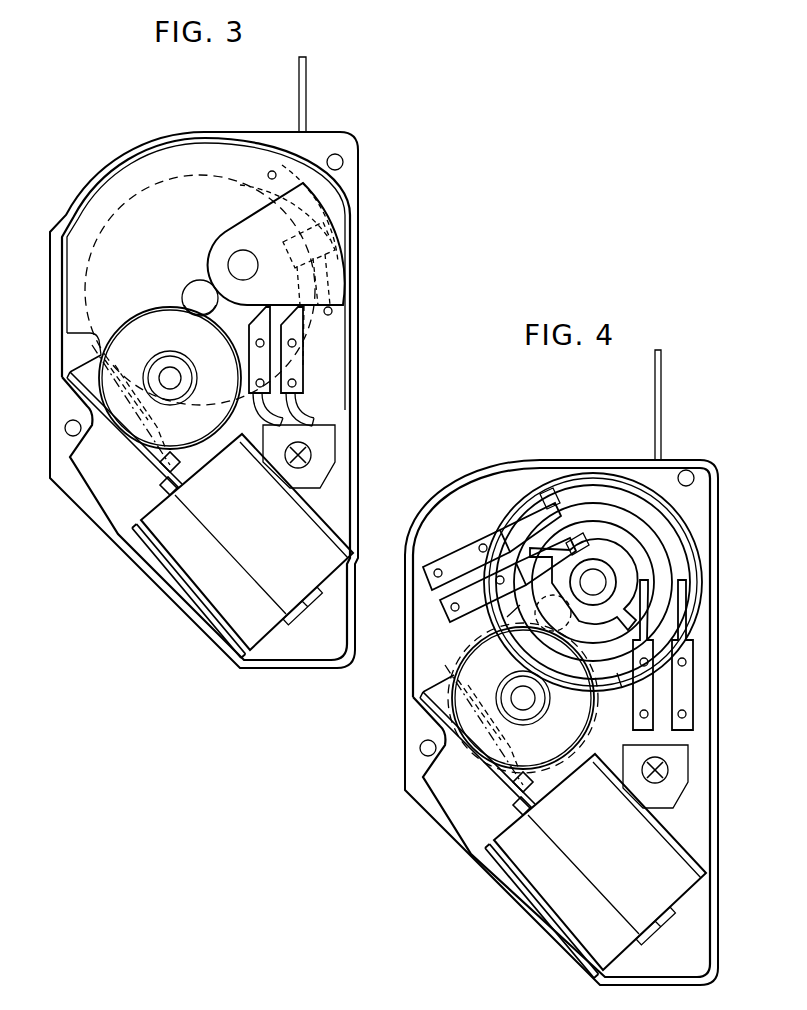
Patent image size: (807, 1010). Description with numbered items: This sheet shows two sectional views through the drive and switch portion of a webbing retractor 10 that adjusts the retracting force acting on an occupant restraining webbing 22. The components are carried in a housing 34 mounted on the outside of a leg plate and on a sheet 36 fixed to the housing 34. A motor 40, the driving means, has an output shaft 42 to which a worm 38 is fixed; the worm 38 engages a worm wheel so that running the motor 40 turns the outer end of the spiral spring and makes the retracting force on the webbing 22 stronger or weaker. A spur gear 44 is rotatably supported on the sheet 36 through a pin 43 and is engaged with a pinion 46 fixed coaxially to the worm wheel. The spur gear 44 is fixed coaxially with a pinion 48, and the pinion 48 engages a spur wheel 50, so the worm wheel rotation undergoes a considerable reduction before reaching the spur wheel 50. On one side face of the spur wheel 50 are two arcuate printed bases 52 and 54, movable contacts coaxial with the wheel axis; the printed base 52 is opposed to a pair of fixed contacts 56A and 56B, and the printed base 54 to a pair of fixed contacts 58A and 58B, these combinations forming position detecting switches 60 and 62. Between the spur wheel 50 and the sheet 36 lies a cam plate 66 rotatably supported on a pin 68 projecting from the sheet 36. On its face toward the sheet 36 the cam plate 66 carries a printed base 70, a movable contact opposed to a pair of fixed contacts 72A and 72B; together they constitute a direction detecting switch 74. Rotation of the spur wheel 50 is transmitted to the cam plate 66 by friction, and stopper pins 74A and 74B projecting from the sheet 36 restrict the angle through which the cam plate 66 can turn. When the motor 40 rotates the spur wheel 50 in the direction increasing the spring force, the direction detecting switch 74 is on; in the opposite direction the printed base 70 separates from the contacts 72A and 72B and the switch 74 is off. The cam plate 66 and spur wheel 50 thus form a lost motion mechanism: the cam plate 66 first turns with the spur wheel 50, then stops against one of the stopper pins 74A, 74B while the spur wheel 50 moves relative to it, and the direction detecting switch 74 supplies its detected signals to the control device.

In FIG. 3, the webbing retractor 10 is at (127, 207).
In FIG. 3, the occupant restraining webbing 22 is at (307, 100).
In FIG. 4, the occupant restraining webbing 22 is at (662, 409).
In FIG. 3, the housing 34 is at (357, 161).
In FIG. 4, the housing 34 is at (412, 736).
In FIG. 3, the sheet 36 is at (340, 366).
In FIG. 3, the worm 38 is at (98, 365).
In FIG. 4, the worm 38 is at (447, 742).
In FIG. 3, the motor 40 is at (195, 588).
In FIG. 4, the motor 40 is at (594, 866).
In FIG. 3, the output shaft 42 is at (165, 480).
In FIG. 3, the pin 43 is at (168, 367).
In FIG. 3, the spur gear 44 is at (155, 313).
In FIG. 4, the spur gear 44 is at (510, 704).
In FIG. 3, the pinion 46 is at (194, 287).
In FIG. 3, the pinion 48 is at (192, 367).
In FIG. 4, the pinion 48 is at (509, 691).
In FIG. 4, the spur wheel 50 is at (500, 522).
In FIG. 4, the printed base 52 is at (645, 558).
In FIG. 4, the printed base 54 is at (660, 528).
In FIG. 4, the fixed contact 56A is at (587, 520).
In FIG. 4, the fixed contact 56B is at (628, 620).
In FIG. 4, the fixed contact 58A is at (540, 493).
In FIG. 4, the fixed contact 58B is at (690, 626).
In FIG. 4, the position detecting switch 60 is at (600, 506).
In FIG. 4, the position detecting switch 62 is at (560, 500).
In FIG. 3, the cam plate 66 is at (315, 208).
In FIG. 3, the pin 68 is at (240, 255).
In FIG. 3, the printed base 70 is at (325, 238).
In FIG. 3, the contact 72A is at (253, 255).
In FIG. 3, the contact 72B is at (325, 283).
In FIG. 3, the direction detecting switch 74 is at (366, 274).
In FIG. 3, the stopper pin 74A is at (333, 313).
In FIG. 3, the stopper pin 74B is at (272, 171).